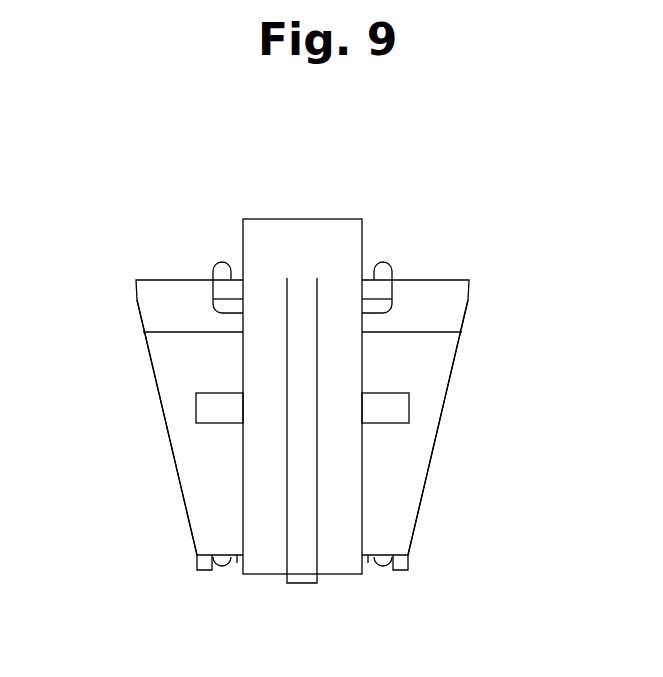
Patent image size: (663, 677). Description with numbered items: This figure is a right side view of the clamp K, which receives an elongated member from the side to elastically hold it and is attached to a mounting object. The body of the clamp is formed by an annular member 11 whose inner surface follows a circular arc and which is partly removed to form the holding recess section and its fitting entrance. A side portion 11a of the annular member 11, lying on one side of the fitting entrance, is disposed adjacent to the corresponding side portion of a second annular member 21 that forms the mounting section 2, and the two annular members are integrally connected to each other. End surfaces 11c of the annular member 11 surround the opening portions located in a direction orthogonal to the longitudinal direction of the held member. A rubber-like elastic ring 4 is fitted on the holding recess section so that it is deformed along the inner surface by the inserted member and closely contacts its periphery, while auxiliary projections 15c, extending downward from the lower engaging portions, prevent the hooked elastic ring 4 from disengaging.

The clamp K is at (423, 233).
The mounting section 2 is at (302, 344).
The annular member 21 is at (302, 430).
The rubber-like elastic ring 4 is at (378, 307).
The annular member 11 is at (430, 412).
The side portion 11a is at (402, 457).
The end surface 11c is at (173, 465).
The auxiliary projection 15c is at (200, 572).